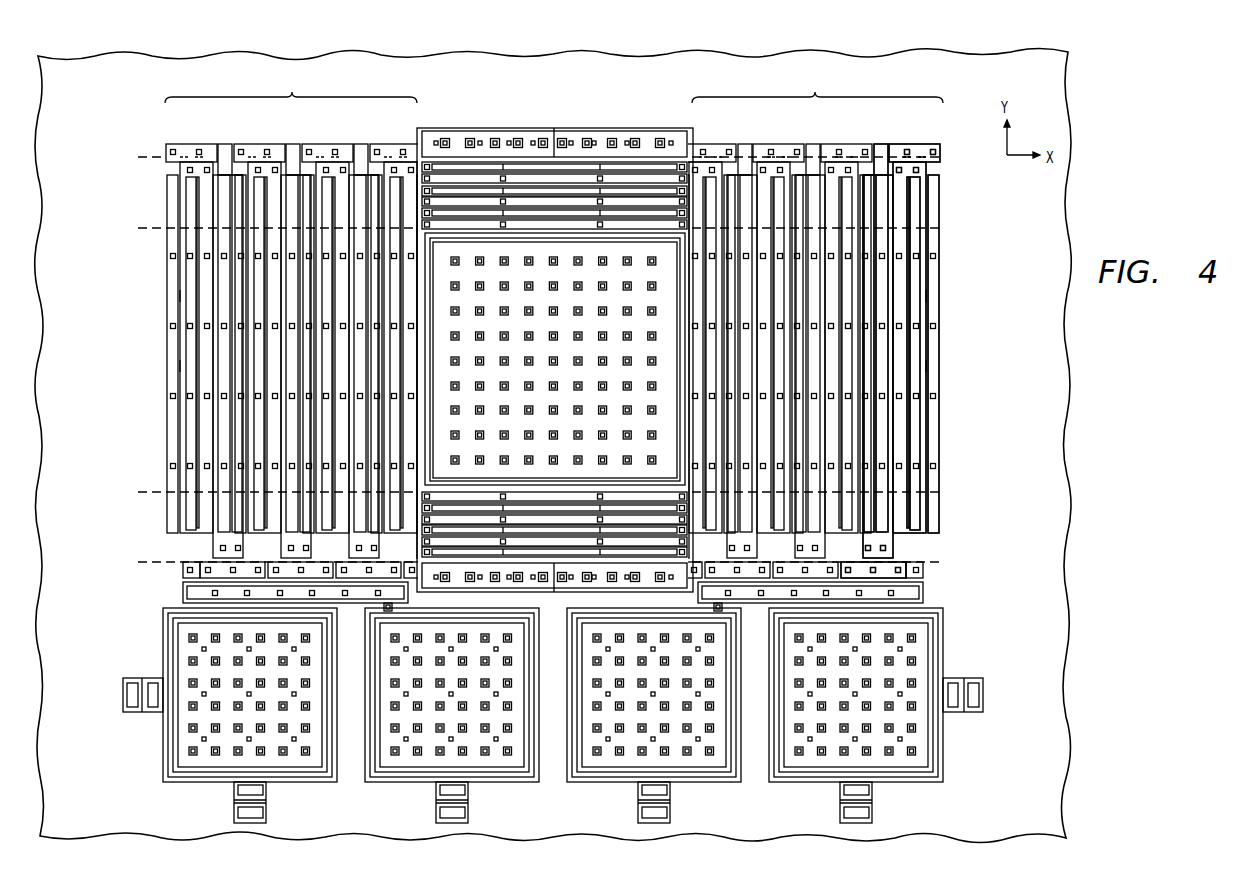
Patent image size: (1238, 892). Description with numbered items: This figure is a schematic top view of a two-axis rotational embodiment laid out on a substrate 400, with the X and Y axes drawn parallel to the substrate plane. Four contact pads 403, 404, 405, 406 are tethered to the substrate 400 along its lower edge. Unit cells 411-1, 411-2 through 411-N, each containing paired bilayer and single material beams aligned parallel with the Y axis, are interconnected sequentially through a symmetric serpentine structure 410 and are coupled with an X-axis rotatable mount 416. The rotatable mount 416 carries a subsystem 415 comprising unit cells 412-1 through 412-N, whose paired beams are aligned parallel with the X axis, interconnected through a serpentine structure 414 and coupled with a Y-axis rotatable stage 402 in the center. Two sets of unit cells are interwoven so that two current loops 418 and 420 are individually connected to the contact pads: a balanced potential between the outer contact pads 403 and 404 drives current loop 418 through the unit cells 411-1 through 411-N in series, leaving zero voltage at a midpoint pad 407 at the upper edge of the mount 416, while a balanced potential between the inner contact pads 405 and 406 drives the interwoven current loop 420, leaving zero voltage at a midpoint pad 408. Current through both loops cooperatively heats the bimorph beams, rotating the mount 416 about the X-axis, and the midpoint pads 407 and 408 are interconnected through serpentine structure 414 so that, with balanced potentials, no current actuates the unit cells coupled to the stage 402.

The substrate 400 is at (1024, 513).
The Y axis rotatable stage 402 is at (632, 445).
The outer contact pad 403 is at (925, 750).
The outer contact pad 404 is at (182, 736).
The inner contact pad 405 is at (410, 762).
The inner contact pad 406 is at (700, 762).
The midpoint pad 407 is at (458, 132).
The midpoint pad 408 is at (684, 568).
The symmetric serpentine structure 410 is at (540, 338).
The unit cell 411-1 is at (188, 145).
The unit cell 411-2 is at (275, 145).
The unit cell 411-N is at (915, 150).
The unit cell 412-1 is at (696, 172).
The unit cell 412-N is at (687, 546).
The serpentine structure 414 is at (135, 157).
The subsystem 415 is at (418, 329).
The X-axis rotatable mount 416 is at (653, 128).
The current loop 418 is at (225, 297).
The current loop 420 is at (208, 367).